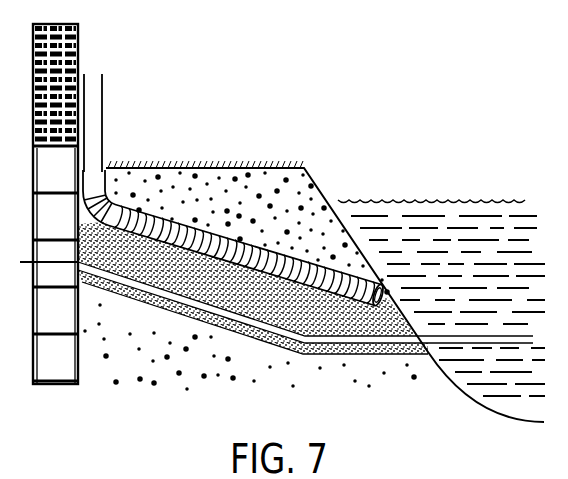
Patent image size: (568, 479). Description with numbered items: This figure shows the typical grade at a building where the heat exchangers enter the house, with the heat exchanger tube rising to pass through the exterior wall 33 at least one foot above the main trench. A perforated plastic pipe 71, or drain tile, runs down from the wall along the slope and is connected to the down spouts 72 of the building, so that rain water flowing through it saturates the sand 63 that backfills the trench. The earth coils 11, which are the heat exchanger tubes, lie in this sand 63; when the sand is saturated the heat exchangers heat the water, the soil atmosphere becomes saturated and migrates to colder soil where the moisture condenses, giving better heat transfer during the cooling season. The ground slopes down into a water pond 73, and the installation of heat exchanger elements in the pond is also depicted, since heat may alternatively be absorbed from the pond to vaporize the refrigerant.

The exterior wall 33 is at (78, 58).
The down spouts 72 is at (101, 122).
The perforated plastic pipe 71 is at (142, 213).
The water pond 73 is at (367, 202).
The sand 63 is at (238, 303).
The heat exchanger tubes 11 is at (325, 341).